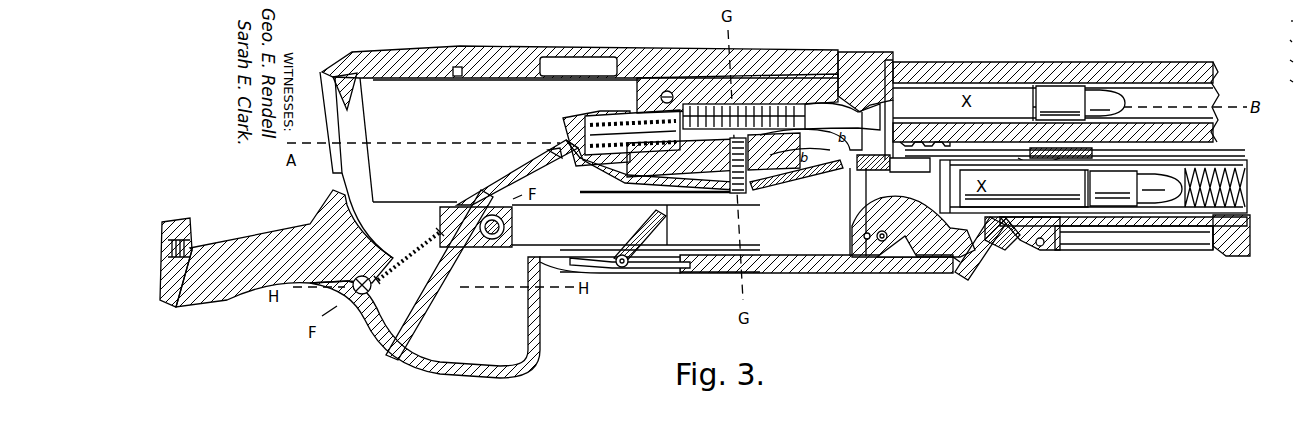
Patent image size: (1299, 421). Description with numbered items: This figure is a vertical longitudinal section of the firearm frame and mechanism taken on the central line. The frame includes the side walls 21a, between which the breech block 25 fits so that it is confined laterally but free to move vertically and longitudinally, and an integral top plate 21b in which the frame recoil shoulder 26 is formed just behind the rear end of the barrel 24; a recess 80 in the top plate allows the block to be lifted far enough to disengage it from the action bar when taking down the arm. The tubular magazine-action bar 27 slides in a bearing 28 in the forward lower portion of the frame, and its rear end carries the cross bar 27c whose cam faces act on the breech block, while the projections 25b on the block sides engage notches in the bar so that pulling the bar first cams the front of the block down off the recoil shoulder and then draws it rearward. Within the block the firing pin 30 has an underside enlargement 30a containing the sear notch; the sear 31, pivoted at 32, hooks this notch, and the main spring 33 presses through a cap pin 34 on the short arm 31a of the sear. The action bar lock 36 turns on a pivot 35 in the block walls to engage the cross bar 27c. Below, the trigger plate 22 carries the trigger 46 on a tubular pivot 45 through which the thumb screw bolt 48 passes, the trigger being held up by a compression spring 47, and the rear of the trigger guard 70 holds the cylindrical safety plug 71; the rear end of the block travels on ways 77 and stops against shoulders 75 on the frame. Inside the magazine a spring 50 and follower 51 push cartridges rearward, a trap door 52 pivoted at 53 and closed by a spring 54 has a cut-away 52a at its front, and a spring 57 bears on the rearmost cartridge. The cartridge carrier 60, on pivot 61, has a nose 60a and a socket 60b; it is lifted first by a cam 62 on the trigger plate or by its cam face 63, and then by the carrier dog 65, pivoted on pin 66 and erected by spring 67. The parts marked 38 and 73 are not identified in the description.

The side walls 21a is at (506, 141).
The top plate 21b is at (475, 47).
The trigger plate 22 is at (787, 274).
The barrel 24 is at (1003, 66).
The breech block 25 is at (653, 79).
The projections 25b is at (833, 192).
The frame recoil shoulder 26 is at (848, 66).
The action bar 27 is at (1240, 240).
The cross bar 27c is at (890, 204).
The bearing 28 is at (920, 268).
The firing pin 30 is at (753, 78).
The elongated enlargement 30a is at (690, 213).
The sear 31 is at (487, 193).
The short arm 31a is at (573, 133).
The sear pivot 32 is at (548, 152).
The main spring 33 is at (782, 106).
The cap pin 34 is at (620, 130).
The pivot 35 is at (773, 193).
The action bar lock 36 is at (803, 192).
The bolt screw 38 is at (668, 90).
The tubular pivot 45 is at (512, 215).
The trigger 46 is at (411, 300).
The compression spring 47 is at (400, 250).
The thumb screw bolt 48 is at (505, 230).
The magazine spring 50 is at (1248, 180).
The follower 51 is at (1245, 157).
The trap door 52 is at (1143, 226).
The cut-away 52a is at (1187, 227).
The door pivot 53 is at (1058, 247).
The door spring 54 is at (1112, 226).
The spring 57 is at (1032, 166).
The cartridge carrier 60 is at (910, 210).
The nose 60a is at (1013, 257).
The socket 60b is at (903, 240).
The carrier pivot 61 is at (864, 253).
The cam 62 is at (872, 262).
The cam face 63 is at (960, 277).
The carrier dog 65 is at (655, 222).
The transverse pin 66 is at (622, 268).
The dog spring 67 is at (650, 268).
The trigger guard 70 is at (528, 313).
The cylindrical plug 71 is at (353, 306).
The stock butt 73 is at (176, 262).
The shoulders 75 is at (366, 107).
The ways 77 is at (593, 205).
The recess 80 is at (580, 66).